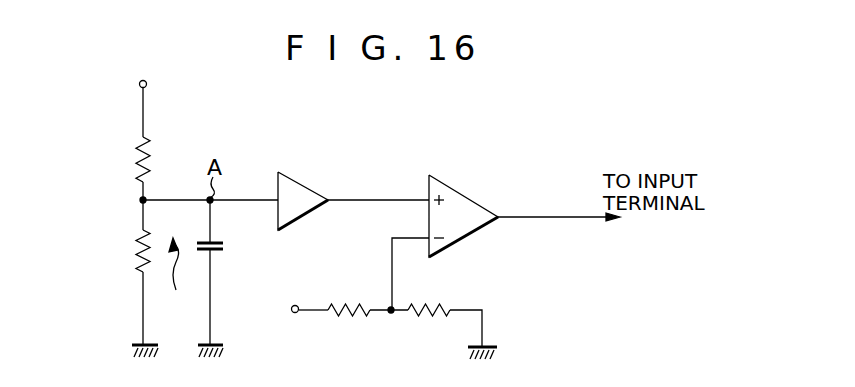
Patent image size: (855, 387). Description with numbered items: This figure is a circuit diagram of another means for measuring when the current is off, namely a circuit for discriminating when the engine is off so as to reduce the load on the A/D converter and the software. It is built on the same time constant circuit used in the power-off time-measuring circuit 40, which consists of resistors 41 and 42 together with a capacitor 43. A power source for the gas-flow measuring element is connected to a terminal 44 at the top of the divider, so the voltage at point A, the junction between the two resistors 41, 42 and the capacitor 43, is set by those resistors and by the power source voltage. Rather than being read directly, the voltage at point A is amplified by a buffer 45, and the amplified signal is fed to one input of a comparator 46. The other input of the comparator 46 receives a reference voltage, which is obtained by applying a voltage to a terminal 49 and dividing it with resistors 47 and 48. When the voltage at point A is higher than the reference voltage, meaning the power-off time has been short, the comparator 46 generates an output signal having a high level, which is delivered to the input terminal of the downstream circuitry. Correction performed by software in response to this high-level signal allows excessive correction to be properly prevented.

The power-off time-measuring circuit 40 is at (179, 276).
The resistor 41 is at (136, 165).
The resistor 42 is at (136, 262).
The capacitor 43 is at (224, 247).
The terminal 44 is at (139, 84).
The buffer 45 is at (314, 190).
The comparator 46 is at (477, 203).
The resistor 47 is at (338, 318).
The resistor 48 is at (421, 318).
The terminal 49 is at (295, 305).